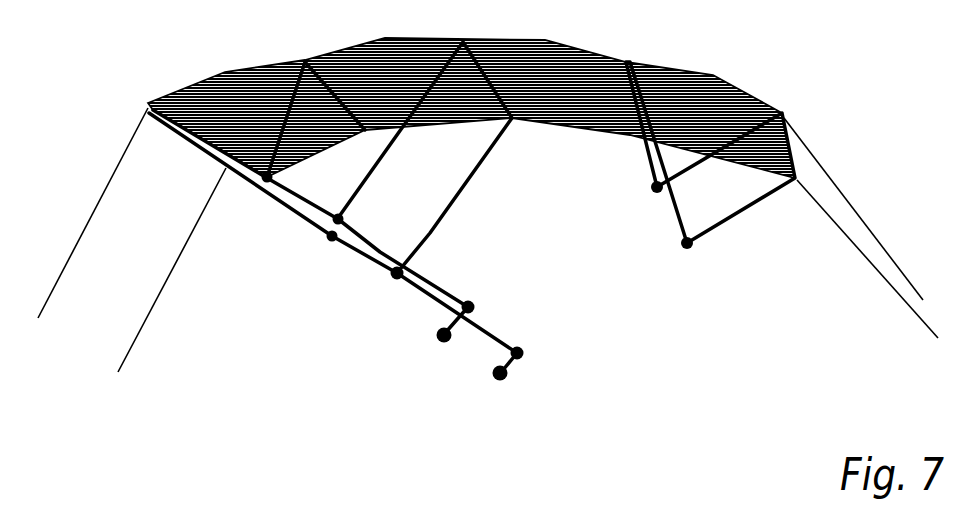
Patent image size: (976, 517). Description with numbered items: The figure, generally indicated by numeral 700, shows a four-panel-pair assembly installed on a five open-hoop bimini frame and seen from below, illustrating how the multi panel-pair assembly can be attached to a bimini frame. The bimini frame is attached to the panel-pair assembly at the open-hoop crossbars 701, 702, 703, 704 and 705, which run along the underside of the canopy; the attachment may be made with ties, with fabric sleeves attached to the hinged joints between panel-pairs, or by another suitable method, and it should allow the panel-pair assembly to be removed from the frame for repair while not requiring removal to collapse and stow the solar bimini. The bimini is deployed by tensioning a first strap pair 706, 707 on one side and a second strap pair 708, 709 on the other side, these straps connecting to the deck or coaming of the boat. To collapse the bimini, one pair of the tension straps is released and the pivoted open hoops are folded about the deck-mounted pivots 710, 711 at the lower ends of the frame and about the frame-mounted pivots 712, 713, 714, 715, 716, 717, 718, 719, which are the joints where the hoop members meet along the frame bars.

The solar bimini assembly 700 is at (156, 60).
The open-hoop crossbar 701 is at (190, 152).
The open-hoop crossbar 702 is at (343, 150).
The open-hoop crossbar 703 is at (472, 130).
The open-hoop crossbar 704 is at (613, 137).
The open-hoop crossbar 705 is at (790, 125).
The tension strap 706 is at (110, 183).
The tension strap 707 is at (152, 332).
The tension strap 708 is at (843, 238).
The tension strap 709 is at (838, 187).
The deck-mounted pivot 710 is at (424, 347).
The deck-mounted pivot 711 is at (520, 383).
The frame-mounted pivot 712 is at (638, 188).
The frame-mounted pivot 713 is at (683, 263).
The frame-mounted pivot 714 is at (470, 300).
The frame-mounted pivot 715 is at (530, 360).
The frame-mounted pivot 716 is at (348, 220).
The frame-mounted pivot 717 is at (387, 283).
The frame-mounted pivot 718 is at (262, 200).
The frame-mounted pivot 719 is at (324, 247).